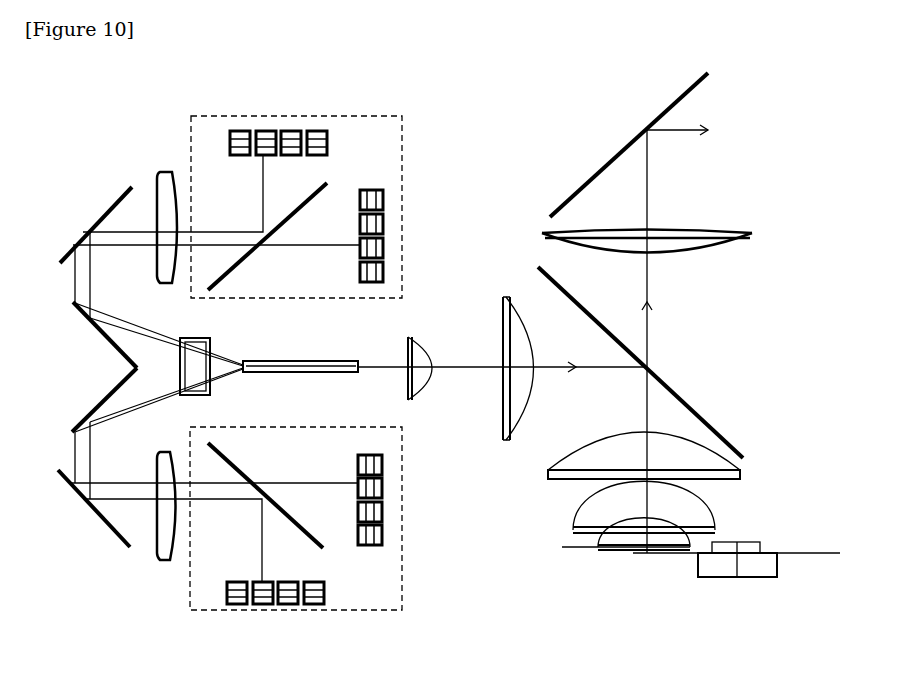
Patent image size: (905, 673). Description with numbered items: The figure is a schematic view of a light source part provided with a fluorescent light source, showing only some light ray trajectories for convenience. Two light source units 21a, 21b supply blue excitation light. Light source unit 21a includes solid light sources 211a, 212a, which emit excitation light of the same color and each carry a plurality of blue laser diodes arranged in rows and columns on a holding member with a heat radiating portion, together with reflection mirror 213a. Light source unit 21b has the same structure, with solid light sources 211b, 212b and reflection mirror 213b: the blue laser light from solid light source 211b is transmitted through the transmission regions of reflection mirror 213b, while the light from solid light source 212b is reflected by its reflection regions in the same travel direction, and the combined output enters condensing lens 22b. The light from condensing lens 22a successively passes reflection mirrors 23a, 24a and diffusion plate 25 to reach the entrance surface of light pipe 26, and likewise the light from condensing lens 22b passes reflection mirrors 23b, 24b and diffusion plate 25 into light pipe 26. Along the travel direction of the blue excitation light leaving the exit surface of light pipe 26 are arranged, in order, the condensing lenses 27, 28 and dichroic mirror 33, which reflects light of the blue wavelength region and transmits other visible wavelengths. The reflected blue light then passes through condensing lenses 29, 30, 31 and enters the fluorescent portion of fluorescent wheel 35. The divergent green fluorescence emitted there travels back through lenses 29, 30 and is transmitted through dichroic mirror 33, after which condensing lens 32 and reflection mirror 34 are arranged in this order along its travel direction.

The light source unit 21a is at (380, 116).
The light source unit 21b is at (402, 582).
The solid light source 211a is at (383, 208).
The solid light source 211b is at (383, 516).
The solid light source 212a is at (268, 131).
The solid light source 212b is at (262, 605).
The reflection mirror 213a is at (327, 183).
The reflection mirror 213b is at (323, 548).
The condensing lens 22a is at (163, 173).
The condensing lens 22b is at (165, 560).
The reflection mirror 23a is at (121, 197).
The reflection mirror 23b is at (104, 525).
The reflection mirror 24a is at (85, 316).
The reflection mirror 24b is at (106, 400).
The diffusion plate 25 is at (212, 343).
The light pipe 26 is at (285, 362).
The lens 27 is at (410, 338).
The lens 28 is at (505, 299).
The lens 29 is at (548, 474).
The lens 30 is at (582, 509).
The lens 31 is at (592, 542).
The lens 32 is at (673, 226).
The dichroic mirror 33 is at (683, 400).
The reflection mirror 34 is at (616, 159).
The fluorescent wheel 35 is at (578, 551).